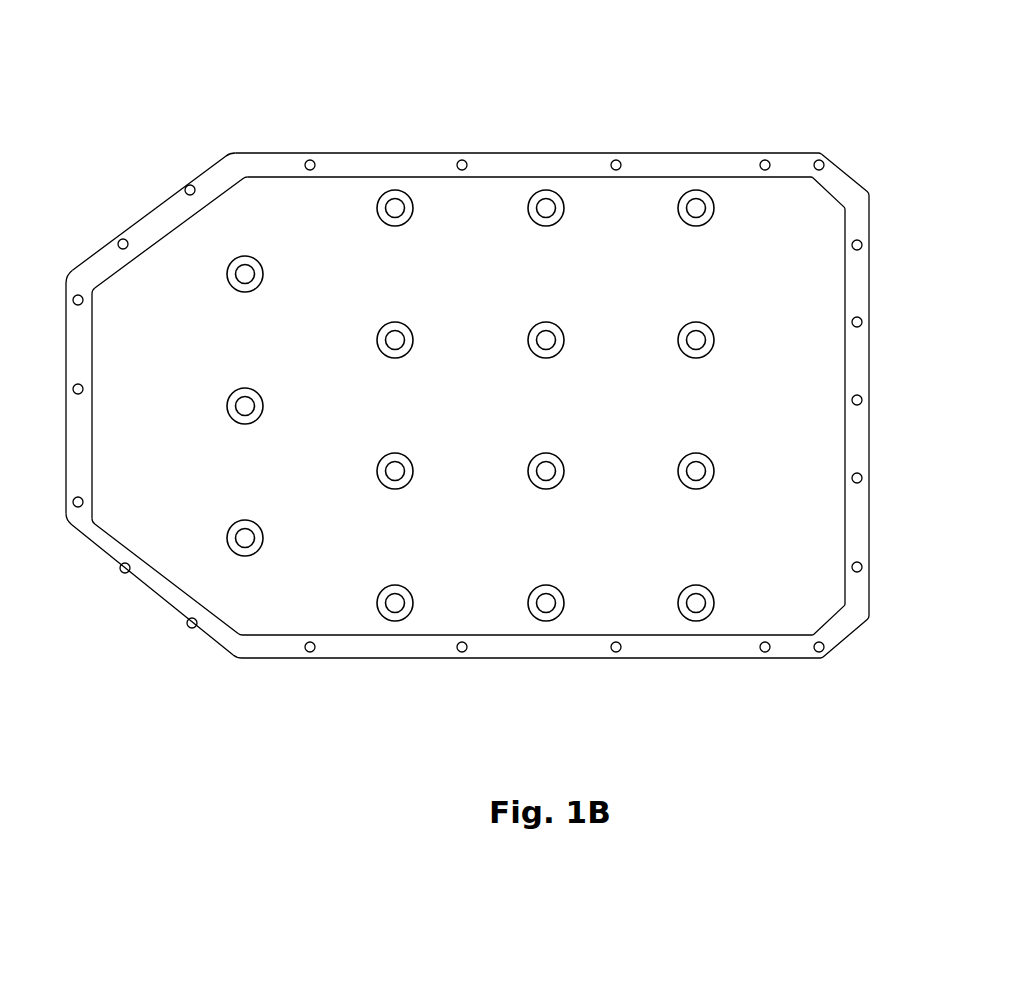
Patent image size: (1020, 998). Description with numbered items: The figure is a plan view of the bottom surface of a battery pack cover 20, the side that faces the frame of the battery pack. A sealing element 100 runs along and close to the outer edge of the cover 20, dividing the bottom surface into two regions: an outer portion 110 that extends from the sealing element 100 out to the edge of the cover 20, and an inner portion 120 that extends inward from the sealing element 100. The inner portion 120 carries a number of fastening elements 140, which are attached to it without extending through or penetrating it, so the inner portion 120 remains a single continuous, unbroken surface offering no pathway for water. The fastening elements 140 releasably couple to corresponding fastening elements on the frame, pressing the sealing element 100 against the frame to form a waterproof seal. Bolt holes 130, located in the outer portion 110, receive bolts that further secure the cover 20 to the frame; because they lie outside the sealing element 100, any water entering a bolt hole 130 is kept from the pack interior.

The cover 20 is at (776, 66).
The sealing element 100 is at (91, 352).
The outer portion 110 is at (346, 156).
The inner portion 120 is at (192, 577).
The bolt holes 130 is at (120, 240).
The fastening elements 140 is at (400, 460).